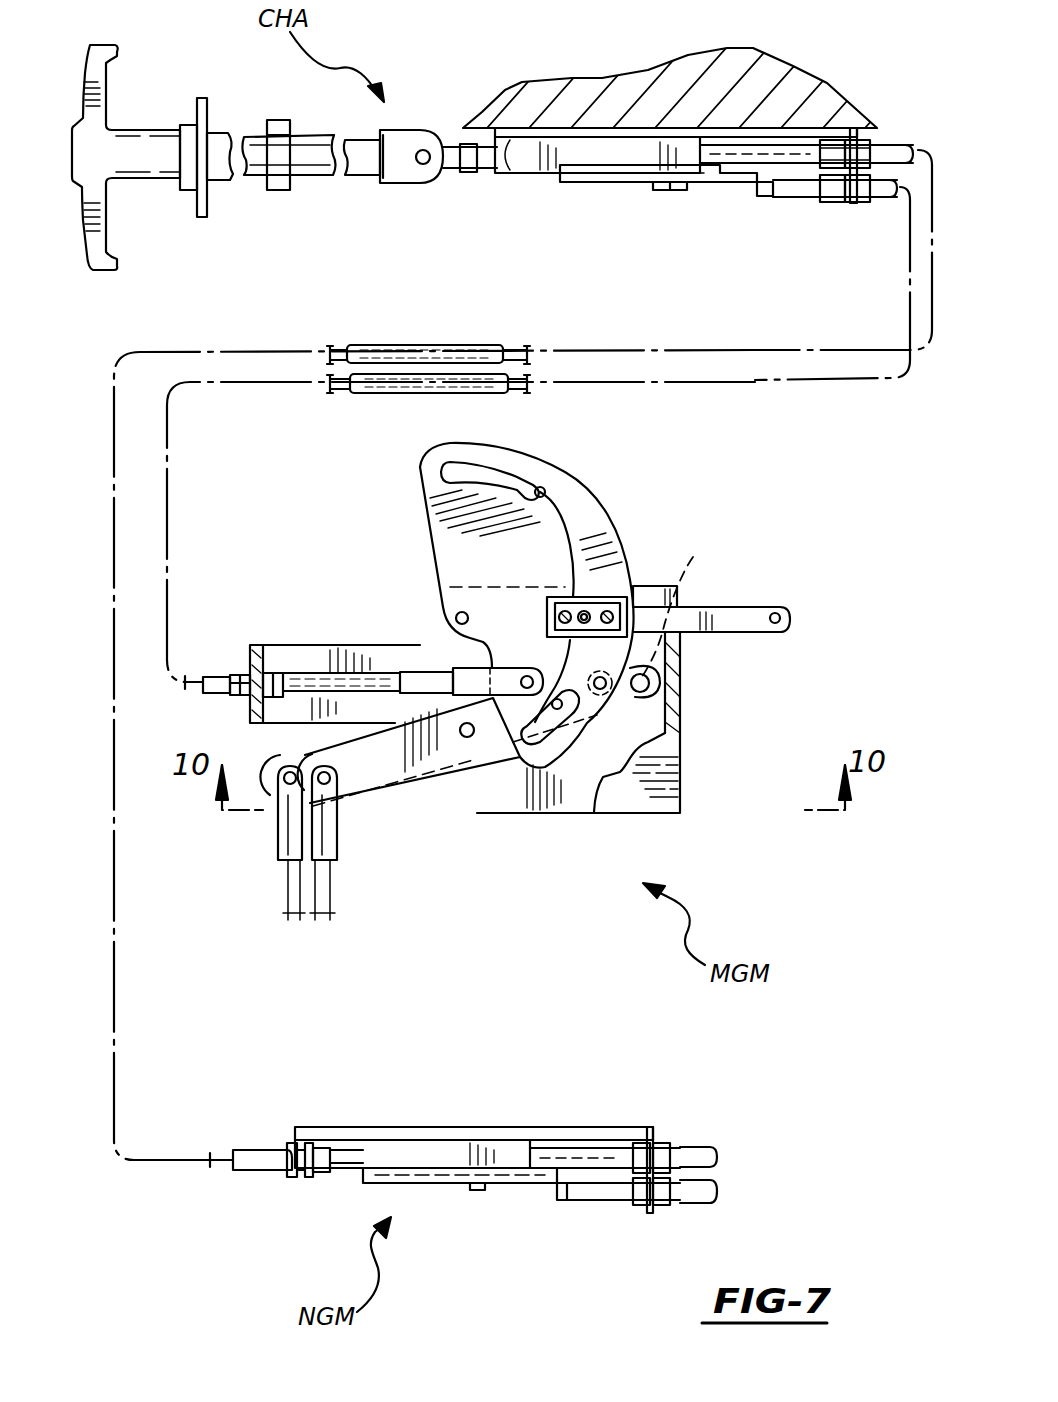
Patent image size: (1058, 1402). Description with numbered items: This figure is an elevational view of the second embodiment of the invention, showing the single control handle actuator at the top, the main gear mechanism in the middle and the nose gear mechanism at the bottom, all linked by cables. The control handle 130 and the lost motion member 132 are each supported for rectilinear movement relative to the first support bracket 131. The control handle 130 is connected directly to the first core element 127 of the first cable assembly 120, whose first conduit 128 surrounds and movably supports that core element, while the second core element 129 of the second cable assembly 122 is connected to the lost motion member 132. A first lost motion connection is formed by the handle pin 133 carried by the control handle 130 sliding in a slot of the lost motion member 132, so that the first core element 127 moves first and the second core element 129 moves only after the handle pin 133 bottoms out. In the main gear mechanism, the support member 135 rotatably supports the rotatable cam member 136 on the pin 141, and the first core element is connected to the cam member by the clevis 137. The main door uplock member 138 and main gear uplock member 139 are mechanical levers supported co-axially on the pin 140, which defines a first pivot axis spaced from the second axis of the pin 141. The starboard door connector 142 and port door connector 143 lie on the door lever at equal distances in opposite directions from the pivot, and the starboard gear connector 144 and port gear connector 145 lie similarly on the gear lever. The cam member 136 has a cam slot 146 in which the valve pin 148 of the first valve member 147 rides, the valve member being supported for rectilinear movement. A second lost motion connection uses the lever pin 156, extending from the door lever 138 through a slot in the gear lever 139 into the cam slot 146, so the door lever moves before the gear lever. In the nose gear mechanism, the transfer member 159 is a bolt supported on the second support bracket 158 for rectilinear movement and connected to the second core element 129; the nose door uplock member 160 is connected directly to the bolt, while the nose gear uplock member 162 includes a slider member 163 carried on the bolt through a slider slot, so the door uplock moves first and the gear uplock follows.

The first cable assembly 120 is at (890, 148).
The second cable assembly 122 is at (880, 195).
The first core element 127 is at (520, 392).
The first conduit 128 is at (373, 392).
The second core element 129 is at (520, 347).
The control handle 130 is at (140, 148).
The first support bracket 131 is at (513, 133).
The lost motion member 132 is at (640, 178).
The handle pin 133 is at (680, 188).
The support member 135 is at (670, 745).
The rotatable cam member 136 is at (427, 525).
The clevis 137 is at (505, 677).
The main door uplock member 138 is at (385, 772).
The main gear uplock member 139 is at (285, 753).
The pin 140 is at (470, 738).
The pin 141 is at (455, 618).
The starboard door connector 142 is at (693, 557).
The port door connector 143 is at (340, 845).
The starboard gear connector 144 is at (688, 645).
The port gear connector 145 is at (285, 815).
The cam slot 146 is at (545, 492).
The first valve member 147 is at (605, 604).
The valve pin 148 is at (590, 606).
The lever pin 156 is at (568, 702).
The second support bracket 158 is at (572, 1130).
The transfer member 159 is at (478, 1192).
The nose door uplock member 160 is at (600, 1148).
The nose gear uplock member 162 is at (603, 1200).
The slider member 163 is at (536, 1186).